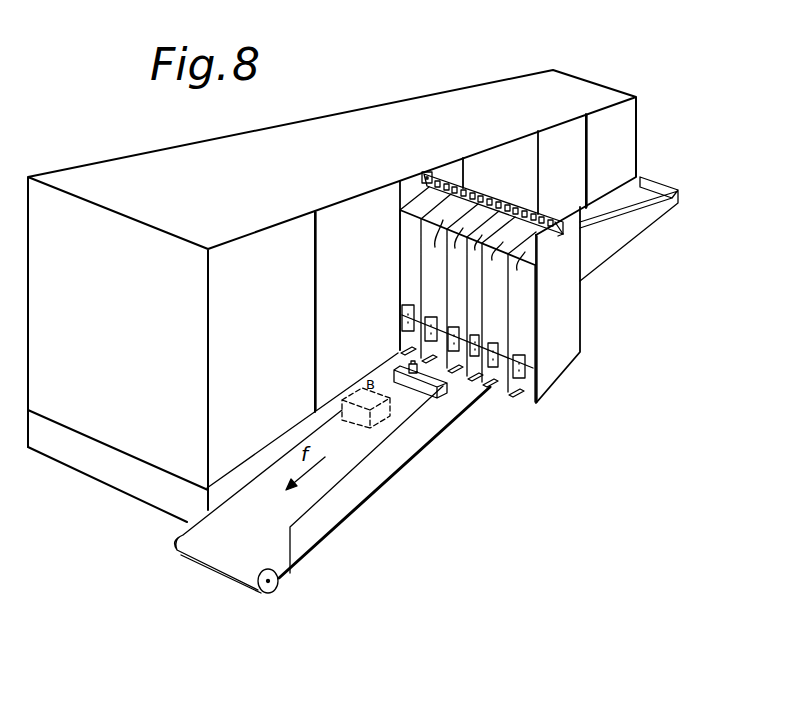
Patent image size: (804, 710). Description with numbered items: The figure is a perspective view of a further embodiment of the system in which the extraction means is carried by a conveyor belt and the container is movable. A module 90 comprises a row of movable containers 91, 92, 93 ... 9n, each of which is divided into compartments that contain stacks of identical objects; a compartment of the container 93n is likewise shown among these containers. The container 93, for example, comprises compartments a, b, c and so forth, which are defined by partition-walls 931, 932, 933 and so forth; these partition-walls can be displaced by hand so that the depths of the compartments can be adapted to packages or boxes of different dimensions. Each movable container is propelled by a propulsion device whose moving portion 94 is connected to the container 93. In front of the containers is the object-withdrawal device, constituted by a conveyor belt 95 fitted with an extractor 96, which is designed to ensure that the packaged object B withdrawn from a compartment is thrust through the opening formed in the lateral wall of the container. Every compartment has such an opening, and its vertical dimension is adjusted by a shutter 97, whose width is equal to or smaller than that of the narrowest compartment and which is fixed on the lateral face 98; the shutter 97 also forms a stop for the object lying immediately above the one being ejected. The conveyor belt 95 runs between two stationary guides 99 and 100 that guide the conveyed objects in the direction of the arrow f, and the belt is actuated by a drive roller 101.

The module 90 is at (418, 97).
The movable container 91 is at (226, 411).
The movable container 92 is at (355, 243).
The movable container 93 is at (566, 310).
The last compartment of module 93n is at (423, 197).
The partition-wall 931 is at (558, 237).
The partition-wall 932 is at (536, 226).
The partition-wall 933 is at (500, 217).
The moving portion 94 is at (556, 319).
The conveyor belt 95 is at (214, 527).
The extractor 96 is at (428, 398).
The shutter 97 is at (431, 332).
The lateral face 98 is at (530, 337).
The stationary guide 99 is at (231, 482).
The stationary guide 100 is at (318, 528).
The drive roller 101 is at (280, 578).
The movable container 9n is at (621, 131).